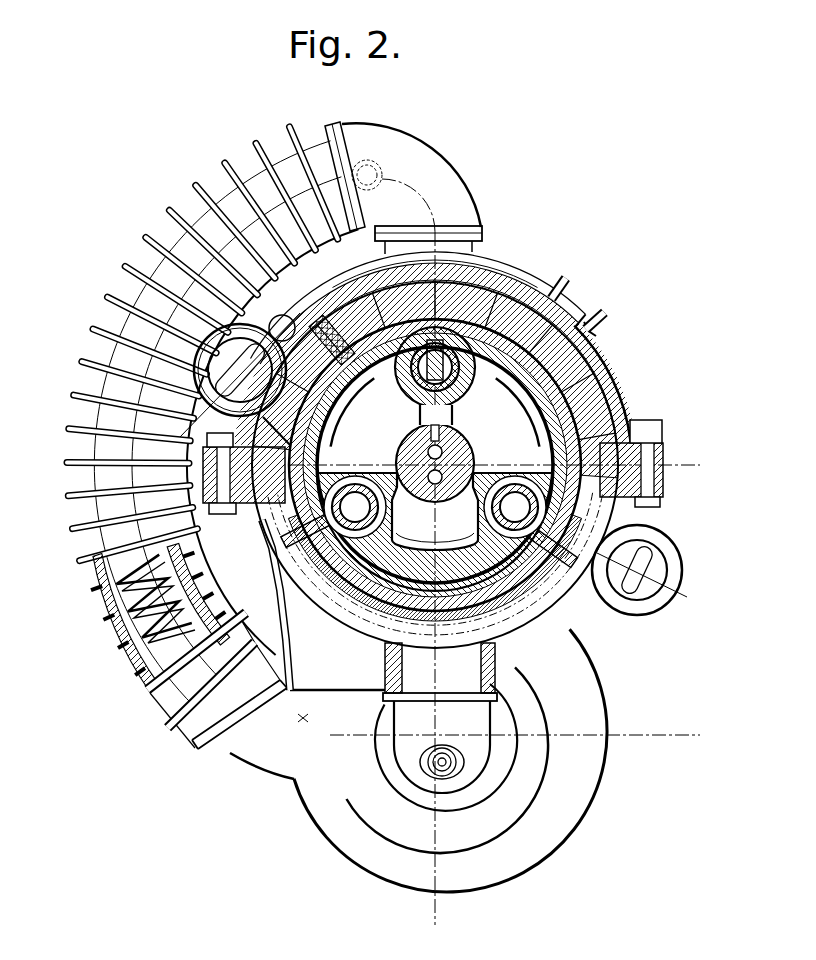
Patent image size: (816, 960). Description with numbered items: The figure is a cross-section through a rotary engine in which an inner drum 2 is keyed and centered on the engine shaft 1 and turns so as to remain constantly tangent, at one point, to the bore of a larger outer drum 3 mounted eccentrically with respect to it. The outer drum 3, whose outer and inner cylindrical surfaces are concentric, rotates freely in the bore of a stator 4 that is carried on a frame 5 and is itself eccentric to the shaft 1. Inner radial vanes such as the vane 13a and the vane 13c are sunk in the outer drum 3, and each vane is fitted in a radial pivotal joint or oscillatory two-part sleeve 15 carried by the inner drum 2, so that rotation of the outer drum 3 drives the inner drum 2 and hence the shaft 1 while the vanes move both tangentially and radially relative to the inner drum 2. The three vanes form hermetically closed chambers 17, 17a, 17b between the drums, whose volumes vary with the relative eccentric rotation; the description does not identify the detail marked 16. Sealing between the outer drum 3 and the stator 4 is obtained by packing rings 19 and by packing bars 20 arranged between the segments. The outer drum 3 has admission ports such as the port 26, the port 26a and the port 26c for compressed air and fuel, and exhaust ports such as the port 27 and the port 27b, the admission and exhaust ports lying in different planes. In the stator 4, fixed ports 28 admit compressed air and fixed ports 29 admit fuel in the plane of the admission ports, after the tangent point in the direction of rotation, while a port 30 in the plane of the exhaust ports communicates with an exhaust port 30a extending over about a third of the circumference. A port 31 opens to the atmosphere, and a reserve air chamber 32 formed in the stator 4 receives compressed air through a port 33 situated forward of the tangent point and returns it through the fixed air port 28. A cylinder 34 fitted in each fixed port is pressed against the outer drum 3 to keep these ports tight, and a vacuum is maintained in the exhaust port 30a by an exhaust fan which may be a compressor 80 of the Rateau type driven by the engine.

The engine shaft 1 is at (442, 444).
The inner drum 2 is at (460, 447).
The outer drum 3 is at (622, 410).
The stator 4 is at (600, 360).
The frame 5 is at (247, 510).
The inner radial vane 13a is at (531, 526).
The sliding vane 13c is at (333, 525).
The radial pivotal joint or oscillatory two-part sleeve 15 is at (512, 493).
The working chamber 16 is at (493, 523).
The chamber 17 is at (312, 462).
The chamber 17a is at (650, 436).
The chamber 17b is at (520, 640).
The packing rings 19 is at (612, 385).
The packing bars 20 is at (462, 300).
The admission port 26 is at (507, 320).
The admission port 26a is at (615, 528).
The casing wall 26c is at (285, 592).
The exhaust port 27 is at (566, 278).
The exhaust port 27b is at (607, 618).
The fixed ports for the admission of compressed air 28 is at (592, 300).
The fixed ports for the admission of fuel 29 is at (592, 330).
The port 30 is at (588, 652).
The exhaust port 30a is at (238, 661).
The port communicating with the atmosphere 31 is at (280, 445).
The chamber 32 is at (432, 272).
The port for the inlet of the compressed air 33 is at (330, 318).
The cylinder 34 is at (298, 322).
The compressor 80 is at (454, 790).